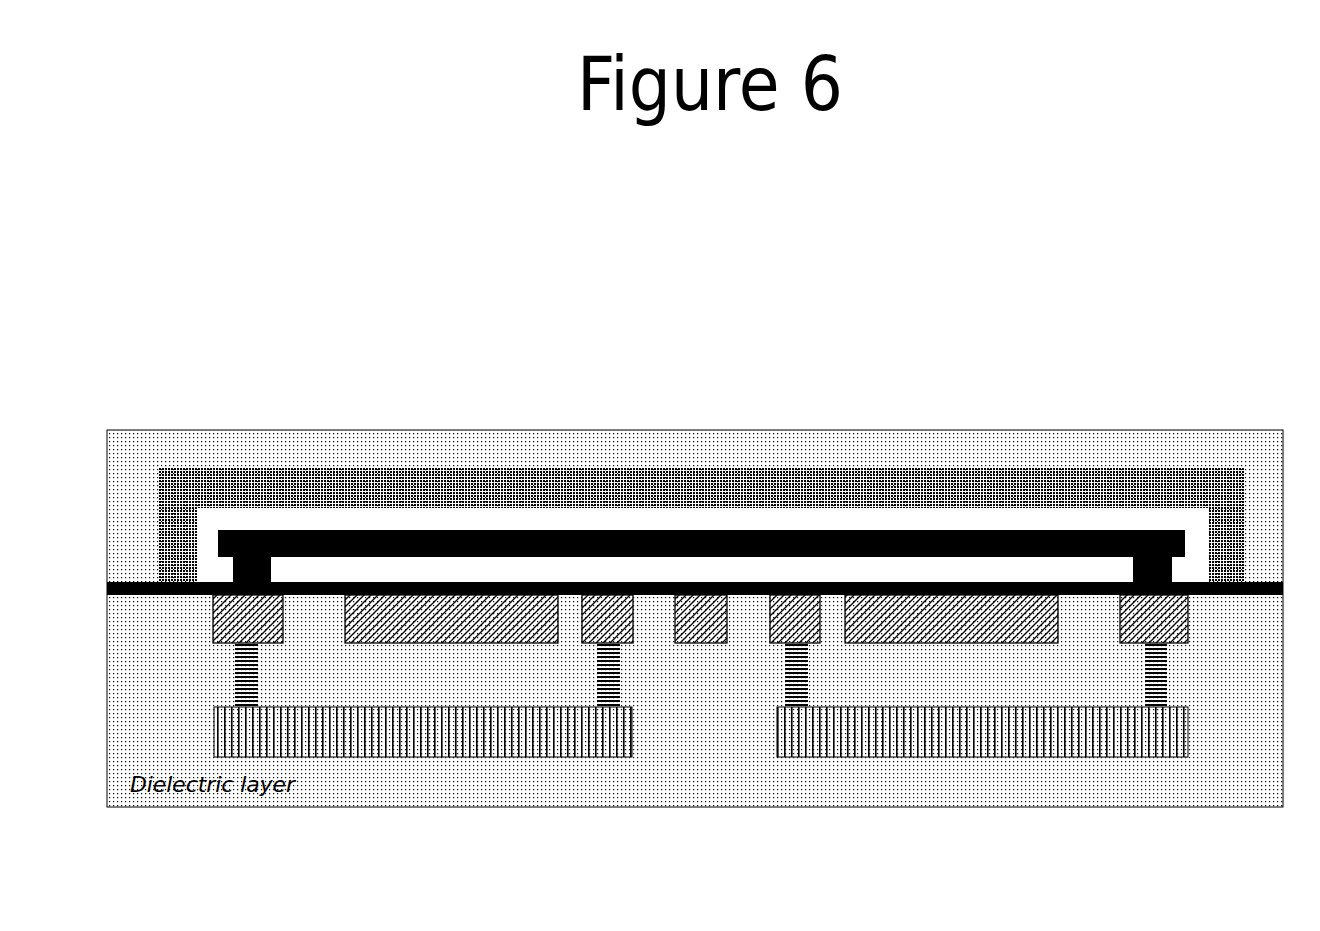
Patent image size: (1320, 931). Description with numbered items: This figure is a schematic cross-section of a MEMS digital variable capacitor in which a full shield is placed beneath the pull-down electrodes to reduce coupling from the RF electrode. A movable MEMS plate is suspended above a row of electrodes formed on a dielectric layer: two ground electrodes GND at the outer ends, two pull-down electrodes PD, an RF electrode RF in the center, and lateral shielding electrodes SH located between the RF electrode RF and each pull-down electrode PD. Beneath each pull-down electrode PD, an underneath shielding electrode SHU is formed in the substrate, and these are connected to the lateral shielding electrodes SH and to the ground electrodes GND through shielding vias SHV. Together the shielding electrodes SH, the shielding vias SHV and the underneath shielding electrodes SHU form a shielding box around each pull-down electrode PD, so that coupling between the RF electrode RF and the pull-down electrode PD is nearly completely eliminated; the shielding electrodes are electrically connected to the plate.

The ground electrode GND is at (699, 619).
The pull-down electrode PD is at (701, 632).
The RF electrode RF is at (701, 632).
The shielding electrode SH is at (794, 612).
The shielding via SHV is at (232, 675).
The underneath shielding electrode SHU is at (908, 732).